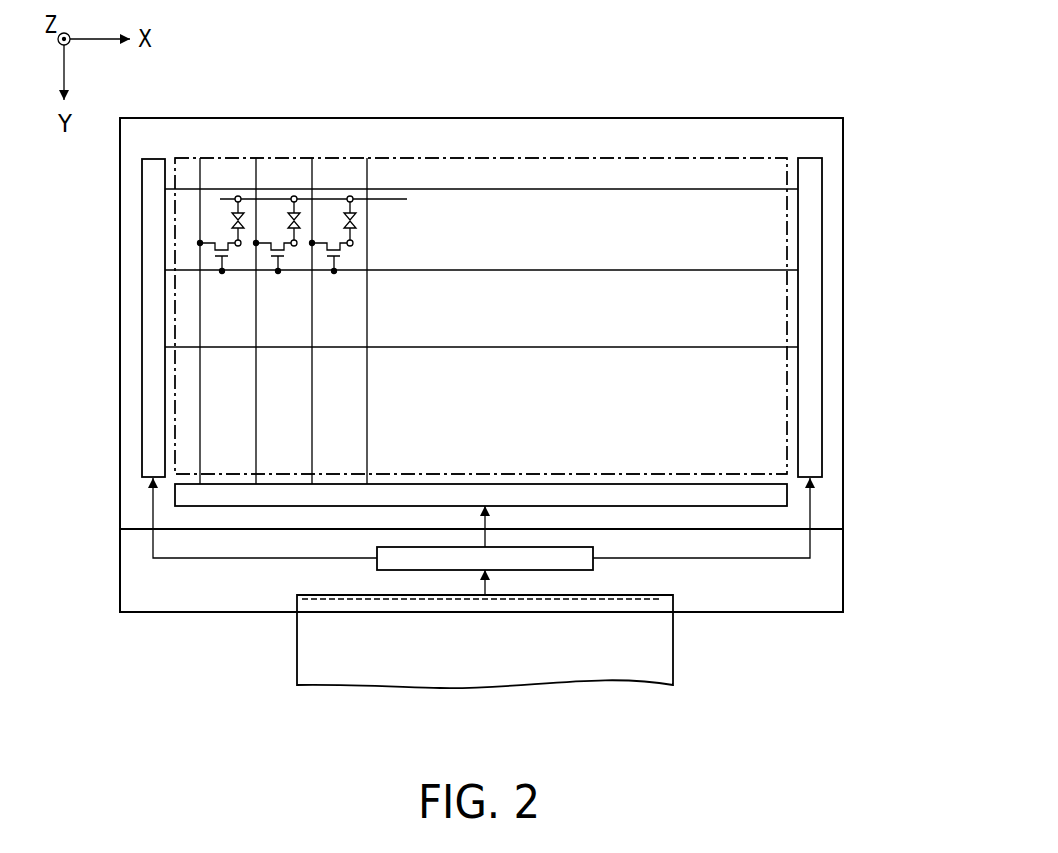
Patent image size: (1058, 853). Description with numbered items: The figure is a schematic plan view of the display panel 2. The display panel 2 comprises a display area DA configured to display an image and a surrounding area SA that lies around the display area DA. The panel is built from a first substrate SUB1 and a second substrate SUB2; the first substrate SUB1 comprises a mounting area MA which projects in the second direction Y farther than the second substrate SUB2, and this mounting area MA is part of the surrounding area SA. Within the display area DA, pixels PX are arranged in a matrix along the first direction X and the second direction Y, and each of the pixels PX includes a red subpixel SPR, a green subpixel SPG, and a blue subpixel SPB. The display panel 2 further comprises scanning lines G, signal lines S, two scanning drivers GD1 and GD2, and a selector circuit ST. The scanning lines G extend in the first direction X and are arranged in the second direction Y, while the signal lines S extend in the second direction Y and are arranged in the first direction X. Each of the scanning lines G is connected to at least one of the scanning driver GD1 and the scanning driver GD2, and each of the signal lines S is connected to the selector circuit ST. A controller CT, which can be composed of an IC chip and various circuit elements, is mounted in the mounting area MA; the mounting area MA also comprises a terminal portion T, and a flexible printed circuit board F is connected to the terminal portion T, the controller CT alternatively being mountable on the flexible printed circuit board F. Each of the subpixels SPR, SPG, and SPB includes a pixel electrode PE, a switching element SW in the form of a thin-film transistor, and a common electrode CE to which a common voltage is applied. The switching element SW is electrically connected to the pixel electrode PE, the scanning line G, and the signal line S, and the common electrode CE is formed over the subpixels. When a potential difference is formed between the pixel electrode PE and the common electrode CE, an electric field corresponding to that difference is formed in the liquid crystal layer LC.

The display panel 2 is at (723, 100).
The pixels PX is at (365, 63).
The red subpixel SPR is at (222, 187).
The green subpixel SPG is at (278, 187).
The blue subpixel SPB is at (334, 187).
The display area DA is at (540, 157).
The surrounding area SA is at (603, 143).
The common electrode CE is at (352, 194).
The liquid crystal layer LC is at (358, 220).
The pixel electrode PE is at (355, 243).
The switching element SW is at (340, 258).
The scanning lines G is at (648, 191).
The signal lines S is at (200, 460).
The scanning driver GD1 is at (142, 373).
The scanning driver GD2 is at (822, 365).
The selector circuit ST is at (547, 484).
The controller CT is at (560, 570).
The first substrate SUB1 is at (176, 613).
The second substrate SUB2 is at (138, 529).
The terminal portion T is at (655, 595).
The flexible printed circuit board F is at (583, 685).
The mounting area MA is at (778, 593).